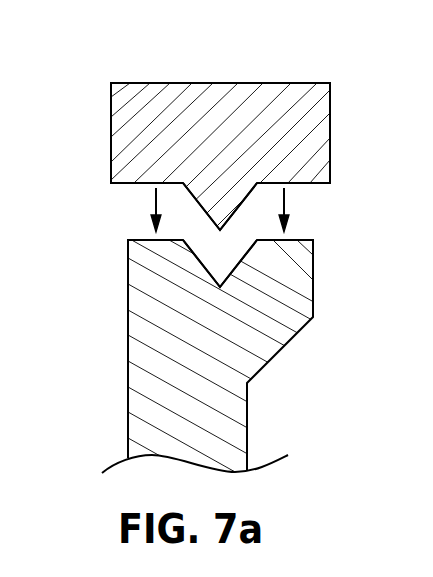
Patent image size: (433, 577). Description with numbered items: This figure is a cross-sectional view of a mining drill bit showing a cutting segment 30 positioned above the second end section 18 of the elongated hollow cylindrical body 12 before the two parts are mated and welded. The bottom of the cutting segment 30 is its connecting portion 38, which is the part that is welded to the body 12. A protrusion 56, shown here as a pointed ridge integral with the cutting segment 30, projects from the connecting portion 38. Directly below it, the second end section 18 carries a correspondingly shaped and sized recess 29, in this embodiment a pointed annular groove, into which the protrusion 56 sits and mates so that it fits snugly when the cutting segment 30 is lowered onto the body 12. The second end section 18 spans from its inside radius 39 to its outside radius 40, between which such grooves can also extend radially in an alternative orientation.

The body 12 is at (150, 383).
The second end section 18 is at (140, 240).
The recess 29 is at (246, 256).
The cutting segment 30 is at (295, 95).
The connecting portion 38 is at (310, 184).
The inside radius 39 is at (313, 276).
The outside radius 40 is at (127, 272).
The protrusion 56 is at (236, 206).